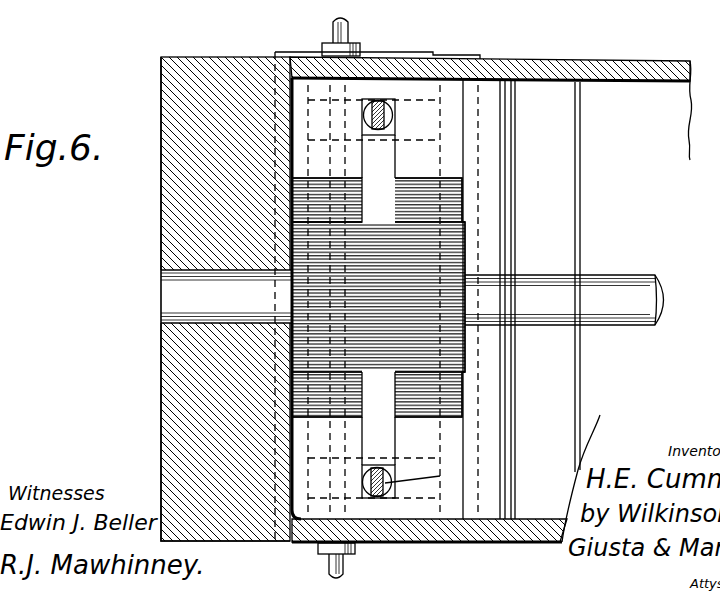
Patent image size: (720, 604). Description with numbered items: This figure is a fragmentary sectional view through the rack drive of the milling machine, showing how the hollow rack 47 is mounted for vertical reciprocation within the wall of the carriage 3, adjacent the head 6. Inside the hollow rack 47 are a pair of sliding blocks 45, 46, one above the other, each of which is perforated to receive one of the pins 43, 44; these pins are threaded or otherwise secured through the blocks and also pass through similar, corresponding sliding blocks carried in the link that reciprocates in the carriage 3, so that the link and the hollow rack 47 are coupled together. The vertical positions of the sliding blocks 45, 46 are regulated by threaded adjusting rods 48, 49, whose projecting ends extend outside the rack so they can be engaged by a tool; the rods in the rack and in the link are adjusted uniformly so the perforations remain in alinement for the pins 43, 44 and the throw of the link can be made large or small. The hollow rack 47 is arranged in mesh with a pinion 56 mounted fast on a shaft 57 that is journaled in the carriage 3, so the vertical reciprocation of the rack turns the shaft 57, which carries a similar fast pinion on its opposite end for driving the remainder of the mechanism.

The carriage 3 is at (182, 186).
The head 6 is at (325, 28).
The pin 43 is at (375, 100).
The pin 44 is at (440, 476).
The sliding block 45 is at (380, 140).
The sliding block 46 is at (378, 463).
The hollow rack 47 is at (420, 163).
The threaded rod 48 is at (336, 30).
The threaded rod 49 is at (343, 567).
The pinion 56 is at (428, 270).
The shaft 57 is at (621, 287).